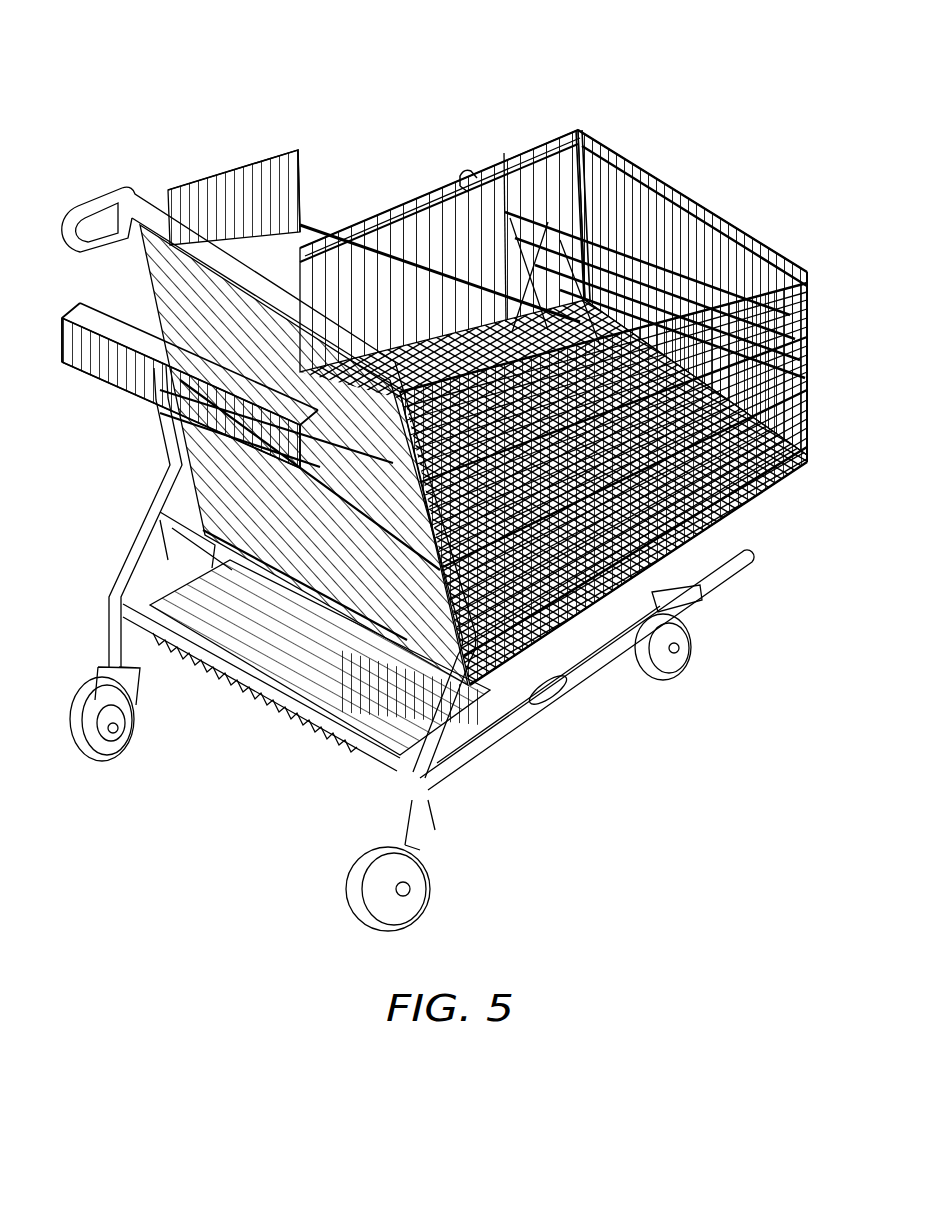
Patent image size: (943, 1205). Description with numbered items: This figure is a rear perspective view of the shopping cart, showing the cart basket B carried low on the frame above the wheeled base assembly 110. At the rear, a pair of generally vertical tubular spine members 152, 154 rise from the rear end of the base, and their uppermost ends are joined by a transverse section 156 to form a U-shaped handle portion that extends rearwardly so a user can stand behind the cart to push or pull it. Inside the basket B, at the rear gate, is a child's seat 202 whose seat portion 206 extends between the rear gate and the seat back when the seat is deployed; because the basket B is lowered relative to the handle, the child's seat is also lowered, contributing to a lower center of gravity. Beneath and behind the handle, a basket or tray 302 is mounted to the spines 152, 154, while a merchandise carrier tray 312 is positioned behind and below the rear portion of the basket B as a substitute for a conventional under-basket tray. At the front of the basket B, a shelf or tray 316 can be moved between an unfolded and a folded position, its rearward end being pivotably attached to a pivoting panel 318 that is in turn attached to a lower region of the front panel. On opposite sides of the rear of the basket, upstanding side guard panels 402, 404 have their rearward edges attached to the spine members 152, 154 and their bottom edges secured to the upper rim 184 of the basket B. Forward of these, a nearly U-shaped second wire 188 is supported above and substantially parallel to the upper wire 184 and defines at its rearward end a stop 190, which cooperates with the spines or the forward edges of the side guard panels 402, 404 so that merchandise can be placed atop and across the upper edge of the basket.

The cart basket B is at (597, 147).
The base assembly 110 is at (607, 663).
The tubular spine member 152 is at (437, 713).
The tubular spine member 154 is at (175, 470).
The transverse section 156 is at (95, 242).
The upper rim 184 is at (393, 187).
The second wire 188 is at (522, 177).
The stop 190 is at (453, 180).
The child's seat 202 is at (317, 293).
The seat portion 206 is at (325, 228).
The basket or tray 302 is at (95, 378).
The tray 312 is at (227, 600).
The shelf or tray 316 is at (605, 240).
The pivoting panel 318 is at (713, 297).
The side guard panel 402 is at (693, 300).
The side guard panel 404 is at (215, 172).